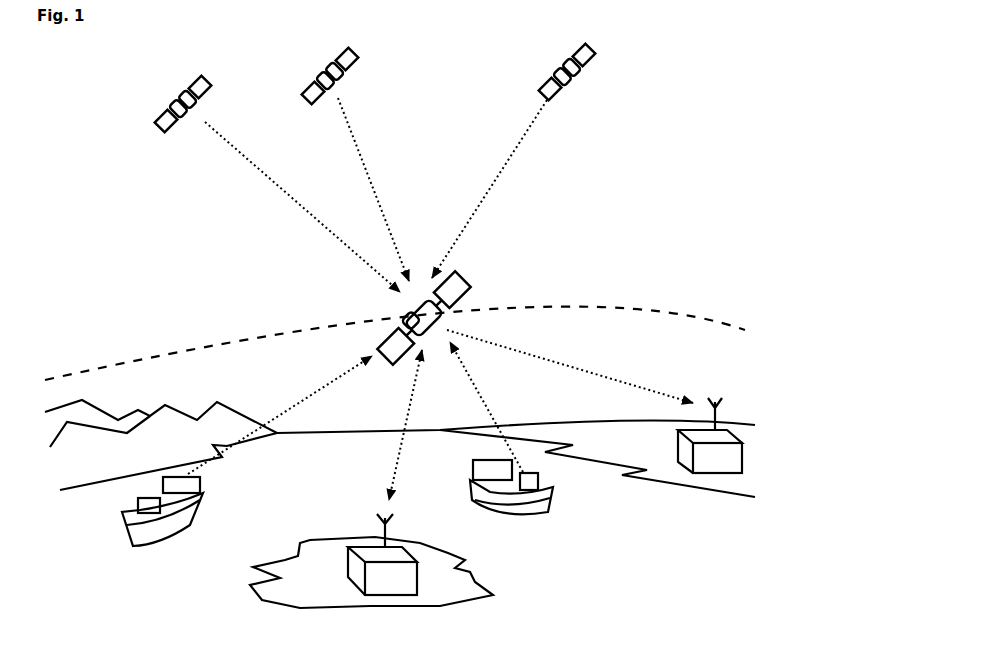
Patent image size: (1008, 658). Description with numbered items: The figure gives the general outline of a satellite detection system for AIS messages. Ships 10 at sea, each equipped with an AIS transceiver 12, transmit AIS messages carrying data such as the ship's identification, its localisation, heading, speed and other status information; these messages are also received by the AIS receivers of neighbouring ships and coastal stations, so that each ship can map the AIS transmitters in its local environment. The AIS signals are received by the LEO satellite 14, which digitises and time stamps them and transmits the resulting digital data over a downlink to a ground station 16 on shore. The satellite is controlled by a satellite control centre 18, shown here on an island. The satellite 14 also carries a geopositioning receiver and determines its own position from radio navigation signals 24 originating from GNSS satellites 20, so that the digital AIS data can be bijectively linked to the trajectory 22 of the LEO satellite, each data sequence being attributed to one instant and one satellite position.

The ship 10 is at (335, 503).
The AIS transceiver 12 is at (131, 503).
The satellite 14 is at (383, 358).
The ground station 16 is at (684, 475).
The satellite control centre 18 is at (347, 585).
The GNSS satellite 20 is at (172, 128).
The trajectory 22 is at (540, 307).
The radio navigation signal 24 is at (313, 213).